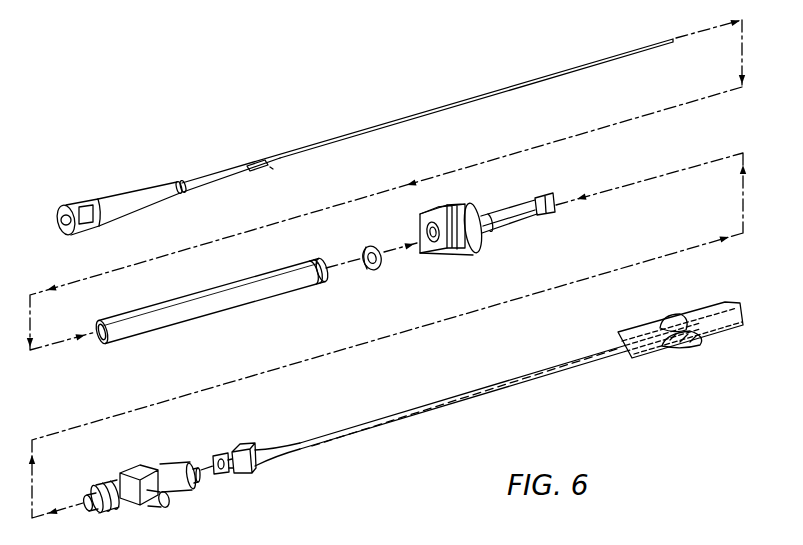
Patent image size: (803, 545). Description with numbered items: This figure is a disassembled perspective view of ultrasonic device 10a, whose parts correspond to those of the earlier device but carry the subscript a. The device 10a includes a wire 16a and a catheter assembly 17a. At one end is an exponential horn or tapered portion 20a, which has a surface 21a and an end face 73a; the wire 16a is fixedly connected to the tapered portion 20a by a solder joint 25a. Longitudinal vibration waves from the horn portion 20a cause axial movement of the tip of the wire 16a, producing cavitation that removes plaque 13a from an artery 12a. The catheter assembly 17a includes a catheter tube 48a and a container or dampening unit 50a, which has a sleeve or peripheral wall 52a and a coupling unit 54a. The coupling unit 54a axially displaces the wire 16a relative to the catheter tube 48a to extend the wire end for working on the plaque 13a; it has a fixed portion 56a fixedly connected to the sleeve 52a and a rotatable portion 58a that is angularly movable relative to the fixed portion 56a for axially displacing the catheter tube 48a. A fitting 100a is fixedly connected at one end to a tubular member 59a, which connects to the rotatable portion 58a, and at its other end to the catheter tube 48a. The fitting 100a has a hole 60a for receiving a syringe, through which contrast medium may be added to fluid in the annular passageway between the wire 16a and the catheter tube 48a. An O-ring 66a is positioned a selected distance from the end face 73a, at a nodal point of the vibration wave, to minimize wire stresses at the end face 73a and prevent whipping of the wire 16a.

The ultrasonic device 10a is at (356, 110).
The artery 12a is at (721, 333).
The plaque 13a is at (674, 332).
The wire 16a is at (507, 87).
The catheter assembly 17a is at (333, 452).
The exponential horn or tapered portion 20a is at (150, 164).
The surface 21a is at (208, 188).
The solder joint 25a is at (256, 162).
The catheter tube 48a is at (420, 406).
The container or dampening unit 50a is at (314, 291).
The sleeve or peripheral wall 52a is at (197, 323).
The coupling unit 54a is at (472, 270).
The fixed portion 56a is at (452, 260).
The rotatable portion 58a is at (483, 241).
The tubular member 59a is at (521, 202).
The hole 60a is at (172, 503).
The O-ring 66a is at (368, 247).
The end face 73a is at (270, 166).
The fitting 100a is at (155, 466).